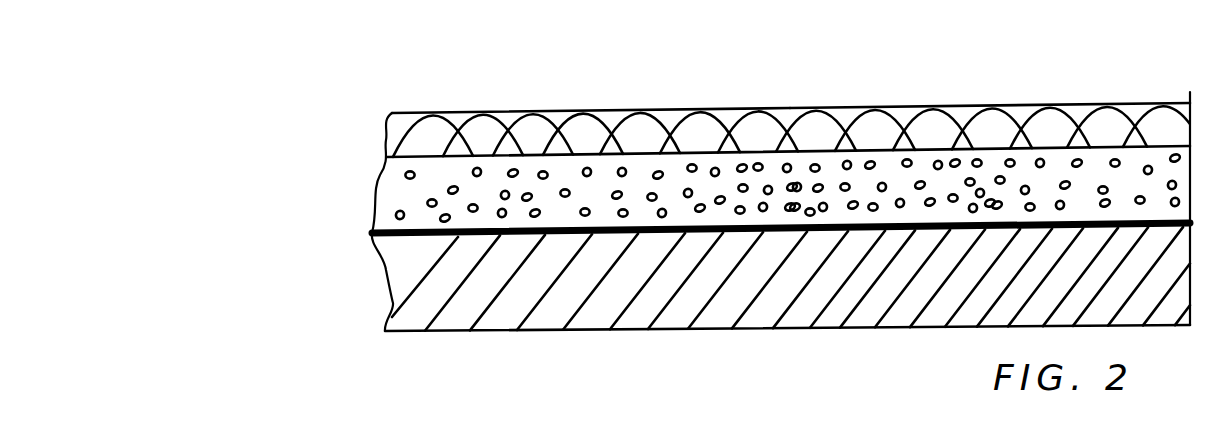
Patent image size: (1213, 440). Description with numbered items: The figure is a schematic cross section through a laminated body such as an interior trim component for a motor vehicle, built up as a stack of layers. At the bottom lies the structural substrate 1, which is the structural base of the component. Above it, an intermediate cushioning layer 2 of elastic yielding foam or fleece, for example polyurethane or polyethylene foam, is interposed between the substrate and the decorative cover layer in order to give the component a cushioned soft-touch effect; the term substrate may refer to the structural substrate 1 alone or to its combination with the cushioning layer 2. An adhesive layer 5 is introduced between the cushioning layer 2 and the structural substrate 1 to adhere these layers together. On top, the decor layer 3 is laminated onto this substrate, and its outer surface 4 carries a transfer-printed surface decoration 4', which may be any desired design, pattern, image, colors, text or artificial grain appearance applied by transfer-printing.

The structural substrate 1 is at (402, 273).
The intermediate cushioning layer 2 is at (395, 192).
The decor layer 3 is at (435, 135).
The outer surface 4 is at (556, 96).
The transfer-printed surface decoration 4' is at (846, 90).
The adhesive layer 5 is at (372, 233).